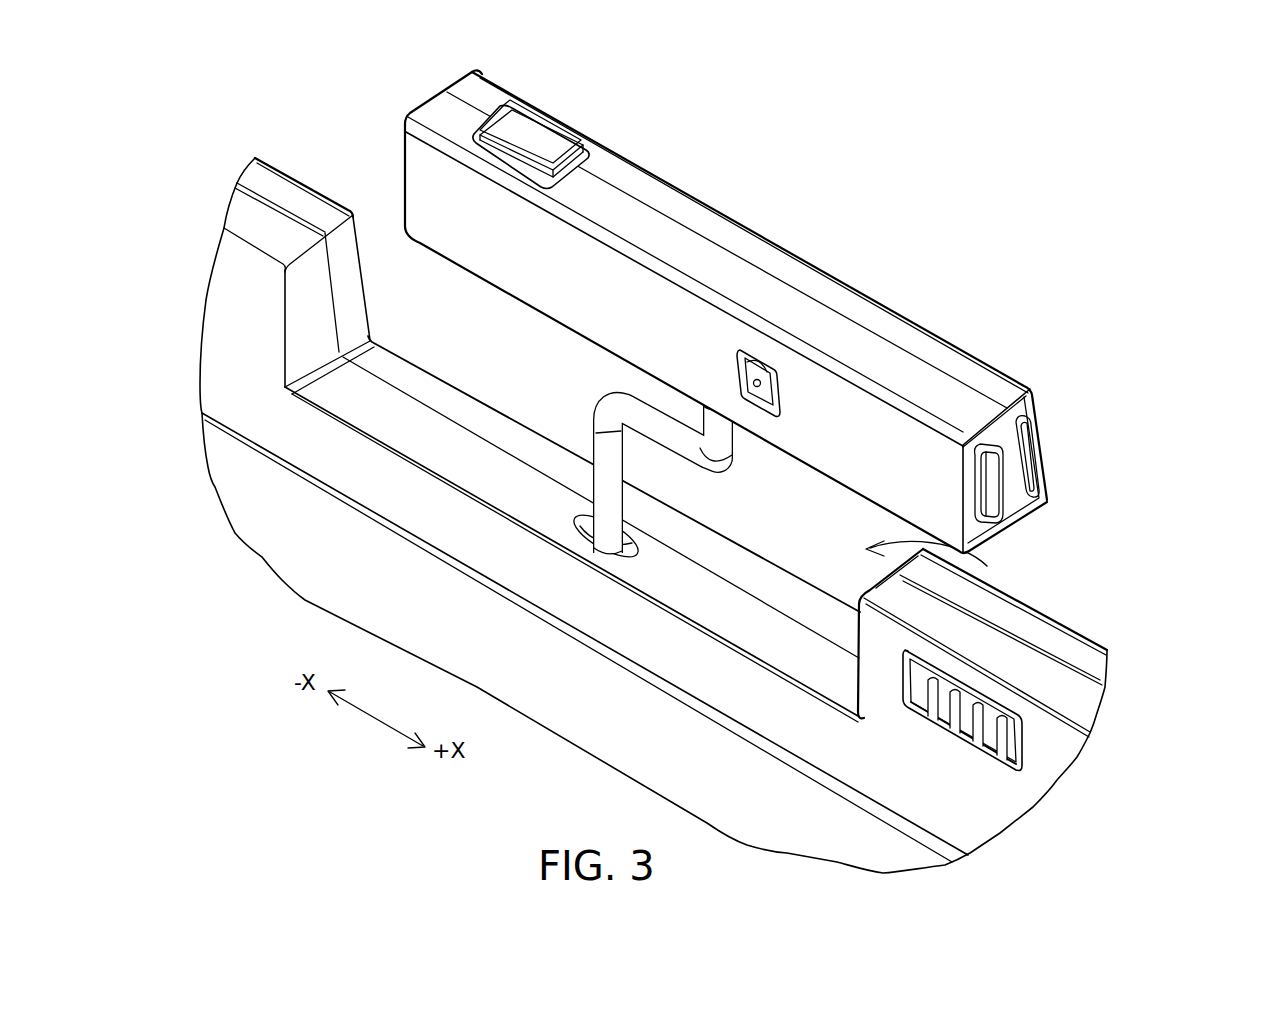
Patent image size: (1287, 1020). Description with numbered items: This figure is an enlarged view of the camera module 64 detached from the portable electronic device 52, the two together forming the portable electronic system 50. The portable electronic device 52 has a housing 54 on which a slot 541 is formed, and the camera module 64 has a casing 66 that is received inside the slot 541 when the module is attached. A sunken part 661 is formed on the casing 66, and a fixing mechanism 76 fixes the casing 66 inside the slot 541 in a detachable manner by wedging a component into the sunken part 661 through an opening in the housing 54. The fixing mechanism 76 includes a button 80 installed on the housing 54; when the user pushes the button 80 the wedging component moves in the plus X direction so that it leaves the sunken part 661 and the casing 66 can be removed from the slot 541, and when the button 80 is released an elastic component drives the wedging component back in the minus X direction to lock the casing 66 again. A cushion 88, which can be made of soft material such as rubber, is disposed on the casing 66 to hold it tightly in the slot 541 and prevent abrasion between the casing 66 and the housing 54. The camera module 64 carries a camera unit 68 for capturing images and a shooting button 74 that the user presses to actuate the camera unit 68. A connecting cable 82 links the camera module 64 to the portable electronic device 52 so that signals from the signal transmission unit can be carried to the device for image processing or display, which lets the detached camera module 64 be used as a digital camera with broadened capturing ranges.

The portable electronic system 50 is at (718, 473).
The portable electronic device 52 is at (704, 517).
The housing 54 is at (1011, 713).
The slot 541 is at (949, 562).
The camera module 64 is at (779, 311).
The casing 66 is at (779, 311).
The sunken part 661 is at (988, 483).
The camera unit 68 is at (758, 364).
The shooting button 74 is at (548, 148).
The fixing mechanism 76 is at (996, 723).
The button 80 is at (998, 737).
The connecting cable 82 is at (713, 466).
The cushion 88 is at (1027, 448).